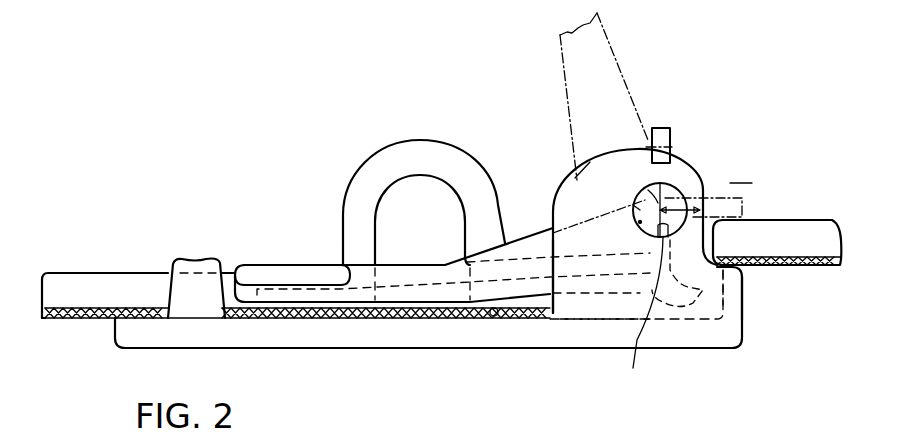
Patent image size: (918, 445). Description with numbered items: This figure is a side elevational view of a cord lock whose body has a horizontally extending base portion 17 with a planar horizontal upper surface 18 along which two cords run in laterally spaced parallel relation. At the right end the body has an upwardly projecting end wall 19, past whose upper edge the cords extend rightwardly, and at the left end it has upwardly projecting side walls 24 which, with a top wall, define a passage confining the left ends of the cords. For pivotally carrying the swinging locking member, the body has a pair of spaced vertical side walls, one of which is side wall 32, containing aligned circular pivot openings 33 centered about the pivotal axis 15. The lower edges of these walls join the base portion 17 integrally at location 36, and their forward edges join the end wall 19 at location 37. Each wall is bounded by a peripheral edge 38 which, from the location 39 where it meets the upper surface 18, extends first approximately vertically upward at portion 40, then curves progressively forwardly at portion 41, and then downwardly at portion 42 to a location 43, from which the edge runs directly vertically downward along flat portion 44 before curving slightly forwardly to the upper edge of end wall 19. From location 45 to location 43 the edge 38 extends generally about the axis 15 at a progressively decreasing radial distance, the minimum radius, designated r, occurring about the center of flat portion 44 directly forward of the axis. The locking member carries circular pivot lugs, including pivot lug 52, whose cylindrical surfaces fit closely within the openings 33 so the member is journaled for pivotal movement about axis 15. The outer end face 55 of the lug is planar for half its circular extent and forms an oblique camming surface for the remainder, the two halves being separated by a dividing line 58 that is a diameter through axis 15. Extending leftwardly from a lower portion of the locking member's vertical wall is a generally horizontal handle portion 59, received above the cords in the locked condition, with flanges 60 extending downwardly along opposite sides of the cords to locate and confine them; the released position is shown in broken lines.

The axis 15 is at (683, 181).
The base portion 17 is at (362, 342).
The upper surface 18 is at (500, 318).
The end wall 19 is at (737, 290).
The side walls 24 is at (188, 280).
The side wall 32 is at (595, 165).
The pivot openings 33 is at (640, 223).
The connection location 36 is at (610, 320).
The connection location 37 is at (723, 297).
The peripheral edges 38 is at (577, 202).
The location 39 is at (550, 320).
The vertical edge portion 40 is at (506, 243).
The forwardly curving edge portion 41 is at (577, 182).
The downwardly curving edge portion 42 is at (672, 158).
The location 43 is at (702, 180).
The vertical flat portion 44 is at (742, 210).
The location 45 is at (558, 225).
The pivot lug 52 is at (652, 187).
The end face 55 is at (637, 204).
The dividing line 58 is at (665, 309).
The handle portion 59 is at (395, 273).
The flanges 60 is at (312, 292).